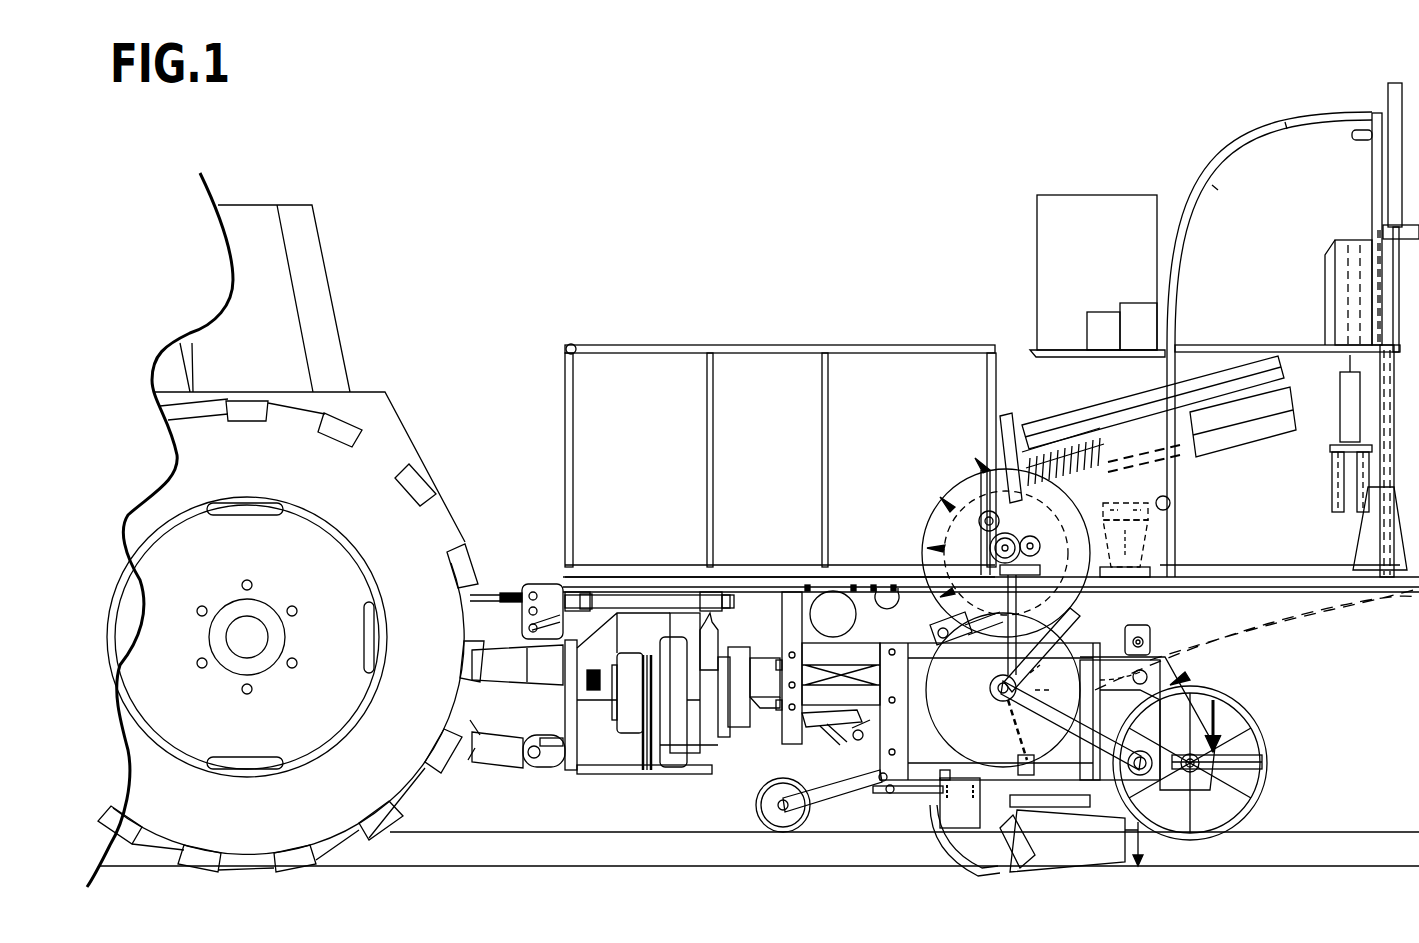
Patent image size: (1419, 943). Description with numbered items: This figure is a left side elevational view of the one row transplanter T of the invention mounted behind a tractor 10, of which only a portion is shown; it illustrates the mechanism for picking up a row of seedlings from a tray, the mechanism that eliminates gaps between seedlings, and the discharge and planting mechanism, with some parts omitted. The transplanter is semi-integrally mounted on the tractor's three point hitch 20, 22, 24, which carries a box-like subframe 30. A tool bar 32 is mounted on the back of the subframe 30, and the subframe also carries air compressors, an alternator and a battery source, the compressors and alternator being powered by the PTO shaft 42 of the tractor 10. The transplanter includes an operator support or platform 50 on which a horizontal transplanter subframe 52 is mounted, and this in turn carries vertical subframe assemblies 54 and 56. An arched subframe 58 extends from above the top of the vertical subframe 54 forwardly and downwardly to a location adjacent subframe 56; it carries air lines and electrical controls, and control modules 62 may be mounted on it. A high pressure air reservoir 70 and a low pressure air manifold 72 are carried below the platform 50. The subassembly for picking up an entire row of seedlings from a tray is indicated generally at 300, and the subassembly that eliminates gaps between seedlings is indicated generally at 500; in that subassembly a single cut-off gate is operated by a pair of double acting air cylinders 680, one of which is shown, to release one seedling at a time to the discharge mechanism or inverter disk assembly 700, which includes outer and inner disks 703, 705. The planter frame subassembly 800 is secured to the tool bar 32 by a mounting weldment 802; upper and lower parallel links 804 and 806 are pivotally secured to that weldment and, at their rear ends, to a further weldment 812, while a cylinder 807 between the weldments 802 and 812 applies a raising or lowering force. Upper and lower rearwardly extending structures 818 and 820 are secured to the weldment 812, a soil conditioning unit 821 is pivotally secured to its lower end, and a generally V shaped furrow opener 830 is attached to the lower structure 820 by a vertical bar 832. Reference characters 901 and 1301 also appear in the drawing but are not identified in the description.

The tractor 10 is at (380, 397).
The three point hitch 20 is at (468, 752).
The three point hitch 22 is at (503, 753).
The three point hitch 24 is at (484, 592).
The box-like subframe 30 is at (660, 790).
The tool bar 32 is at (767, 660).
The PTO shaft 42 is at (500, 667).
The operator support or platform 50 is at (777, 563).
The horizontal transplanter subframe 52 is at (1262, 565).
The vertical subframe assembly 54 is at (1367, 538).
The vertical subframe assembly 56 is at (1160, 540).
The arched subframe 58 is at (1225, 168).
The control modules 62 is at (1138, 307).
The high pressure air reservoir 70 is at (887, 603).
The low pressure air manifold 72 is at (833, 612).
The seedling pick-up subassembly 300 is at (1330, 156).
The gap eliminating subassembly 500 is at (1222, 328).
The double acting air cylinder 680 is at (1007, 417).
The inverter disk assembly 700 is at (953, 427).
The outer disk 703 is at (957, 483).
The inner disk 705 is at (950, 520).
The planter frame subassembly 800 is at (1232, 677).
The mounting weldment 802 is at (780, 707).
The upper parallel link 804 is at (817, 653).
The lower parallel link 806 is at (802, 716).
The cylinder 807 is at (852, 718).
The further weldment 812 is at (868, 660).
The upper rearwardly extending structure 818 is at (998, 690).
The lower rearwardly extending structure 820 is at (925, 700).
The soil conditioning unit 821 is at (843, 823).
The furrow opener 830 is at (950, 886).
The vertical bar 832 is at (1100, 855).
The bracket 901 is at (942, 793).
The trajectory 1301 is at (1242, 650).
The transplanter T is at (996, 101).